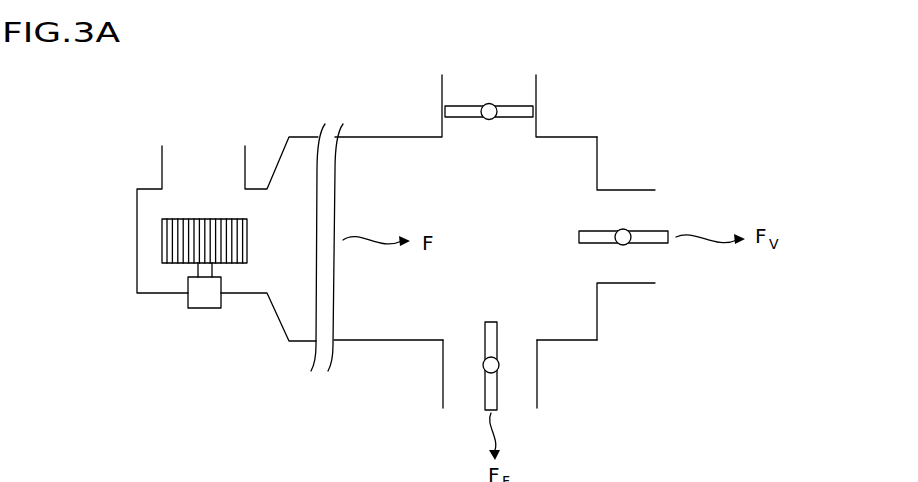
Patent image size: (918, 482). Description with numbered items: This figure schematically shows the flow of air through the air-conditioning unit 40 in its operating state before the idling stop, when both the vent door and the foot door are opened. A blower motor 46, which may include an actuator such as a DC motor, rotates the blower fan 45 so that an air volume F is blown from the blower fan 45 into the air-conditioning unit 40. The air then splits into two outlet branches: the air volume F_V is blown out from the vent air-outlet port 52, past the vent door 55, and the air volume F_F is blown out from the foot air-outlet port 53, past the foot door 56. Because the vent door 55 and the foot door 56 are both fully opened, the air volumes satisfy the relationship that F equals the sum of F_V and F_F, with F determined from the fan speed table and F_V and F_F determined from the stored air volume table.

The air-conditioning unit 40 is at (383, 128).
The blower fan 45 is at (162, 242).
The blower motor 46 is at (188, 303).
The vent air-outlet port 52 is at (646, 222).
The foot air-outlet port 53 is at (510, 395).
The vent door 55 is at (621, 245).
The foot door 56 is at (483, 365).